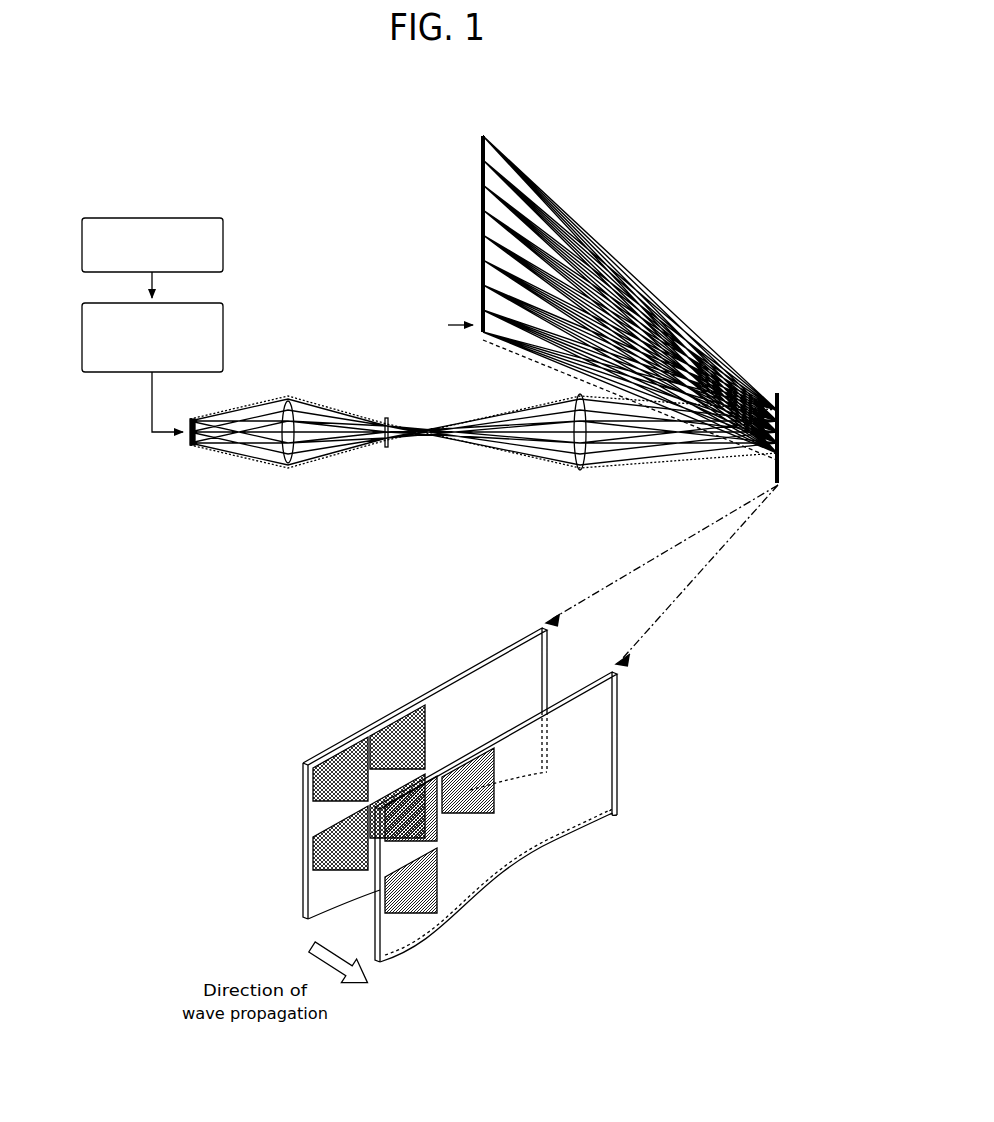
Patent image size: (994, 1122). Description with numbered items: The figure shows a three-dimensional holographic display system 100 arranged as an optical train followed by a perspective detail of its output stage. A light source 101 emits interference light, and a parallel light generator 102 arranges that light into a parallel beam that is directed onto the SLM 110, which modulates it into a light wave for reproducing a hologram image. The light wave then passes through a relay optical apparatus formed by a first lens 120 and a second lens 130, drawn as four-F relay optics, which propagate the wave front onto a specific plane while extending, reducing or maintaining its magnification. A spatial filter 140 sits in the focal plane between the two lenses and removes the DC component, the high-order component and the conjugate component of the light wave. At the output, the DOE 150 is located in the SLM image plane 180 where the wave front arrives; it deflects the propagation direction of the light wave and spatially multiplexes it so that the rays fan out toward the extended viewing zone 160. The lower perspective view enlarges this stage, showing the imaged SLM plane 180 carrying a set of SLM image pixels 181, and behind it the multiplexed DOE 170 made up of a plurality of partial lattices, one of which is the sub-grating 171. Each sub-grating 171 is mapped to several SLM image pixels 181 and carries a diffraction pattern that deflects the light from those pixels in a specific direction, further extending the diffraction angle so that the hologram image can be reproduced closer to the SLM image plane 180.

The 3D holographic display system 100 is at (385, 130).
The light source 101 is at (150, 218).
The parallel light generator 102 is at (223, 336).
The SLM 110 is at (192, 447).
The relay optical apparatus (lens 1) 120 is at (290, 500).
The relay optical apparatus (lens 2) 130 is at (582, 500).
The spatial filter 140 is at (385, 500).
The DOE 150 is at (768, 477).
The extended viewing zone 160 is at (483, 232).
The multiplexed DOE 170 is at (597, 743).
The partial lattice (sub-grating) 171 is at (418, 923).
The SLM image plane 180 is at (443, 683).
The SLM image pixel 181 is at (303, 815).